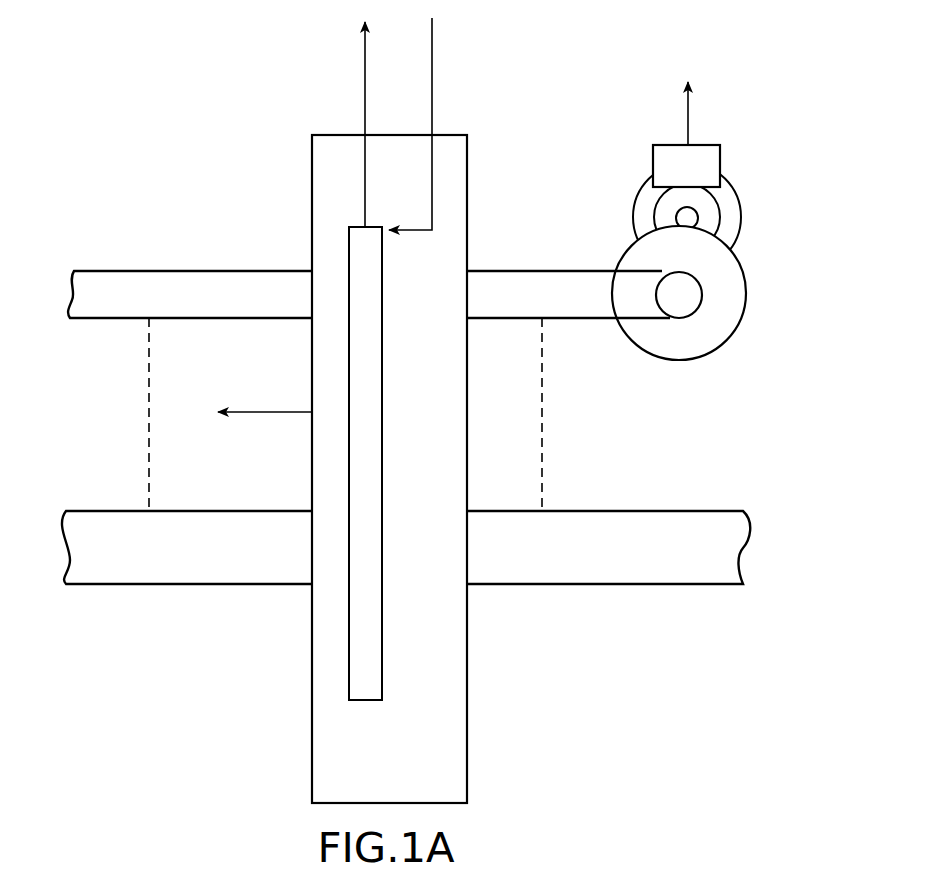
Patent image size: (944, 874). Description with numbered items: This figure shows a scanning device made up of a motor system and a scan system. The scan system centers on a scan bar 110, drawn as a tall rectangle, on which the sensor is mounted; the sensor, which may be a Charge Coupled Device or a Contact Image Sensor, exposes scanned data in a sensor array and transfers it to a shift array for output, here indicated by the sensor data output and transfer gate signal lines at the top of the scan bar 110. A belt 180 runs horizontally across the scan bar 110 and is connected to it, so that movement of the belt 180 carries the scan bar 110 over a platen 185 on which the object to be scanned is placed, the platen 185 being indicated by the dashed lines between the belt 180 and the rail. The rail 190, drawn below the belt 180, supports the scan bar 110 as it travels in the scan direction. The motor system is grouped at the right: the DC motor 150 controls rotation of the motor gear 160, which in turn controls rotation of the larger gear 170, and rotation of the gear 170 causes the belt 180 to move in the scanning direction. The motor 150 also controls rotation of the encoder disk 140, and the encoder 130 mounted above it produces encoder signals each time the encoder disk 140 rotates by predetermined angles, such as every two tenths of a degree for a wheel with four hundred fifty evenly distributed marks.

The scan bar 110 is at (469, 728).
The encoder 130 is at (530, 370).
The encoder disk 140 is at (743, 183).
The DC motor 150 is at (724, 212).
The motor gear 160 is at (700, 223).
The gear 170 is at (702, 360).
The belt 180 is at (160, 269).
The platen 185 is at (545, 426).
The rail 190 is at (110, 509).